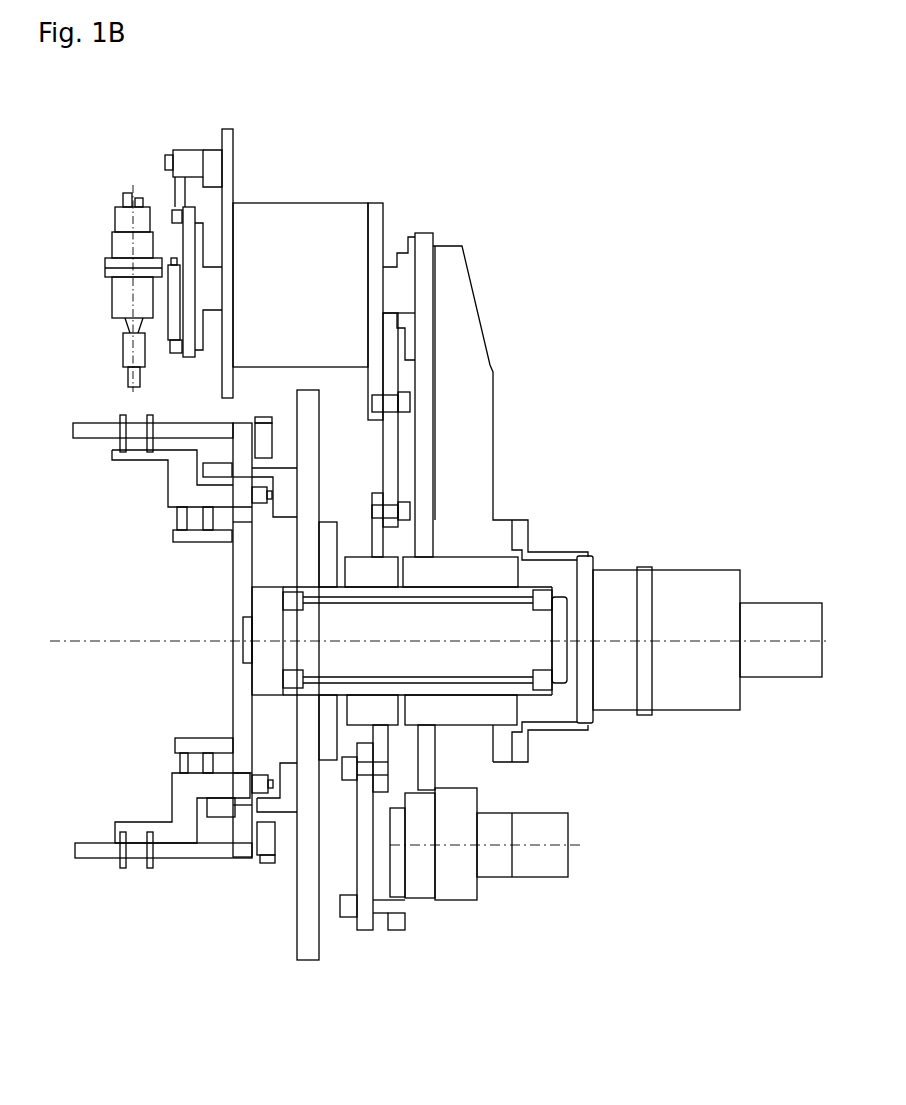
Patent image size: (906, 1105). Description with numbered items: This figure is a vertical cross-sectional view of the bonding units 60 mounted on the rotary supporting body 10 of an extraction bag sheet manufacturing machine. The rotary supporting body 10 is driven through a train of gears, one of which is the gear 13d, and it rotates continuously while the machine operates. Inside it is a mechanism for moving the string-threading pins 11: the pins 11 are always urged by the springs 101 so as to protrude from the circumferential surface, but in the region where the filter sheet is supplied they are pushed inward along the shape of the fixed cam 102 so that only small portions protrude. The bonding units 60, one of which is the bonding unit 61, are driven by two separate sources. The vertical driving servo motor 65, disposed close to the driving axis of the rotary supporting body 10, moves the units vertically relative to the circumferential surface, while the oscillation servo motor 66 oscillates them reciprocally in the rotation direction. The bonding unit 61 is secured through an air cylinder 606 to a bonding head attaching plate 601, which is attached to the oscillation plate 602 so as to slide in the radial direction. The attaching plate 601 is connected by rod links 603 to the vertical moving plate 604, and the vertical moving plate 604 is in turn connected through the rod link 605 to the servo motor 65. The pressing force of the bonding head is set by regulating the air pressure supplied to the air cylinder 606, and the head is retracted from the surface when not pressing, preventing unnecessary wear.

The rotary supporting body 10 is at (197, 860).
The string-threading pins 11 is at (122, 417).
The gear 13d is at (260, 417).
The bonding units 60 is at (117, 292).
The bonding unit 61 is at (110, 288).
The vertical driving servo motor 65 is at (542, 867).
The oscillation servo motor 66 is at (778, 613).
The springs 101 is at (175, 520).
The fixed cam 102 is at (285, 470).
The bonding head attaching plates 601 is at (377, 207).
The oscillation plate 602 is at (425, 232).
The rod links 603 is at (390, 453).
The vertical moving plate 604 is at (380, 530).
The rod link 605 is at (367, 830).
The air cylinders 606 is at (172, 340).